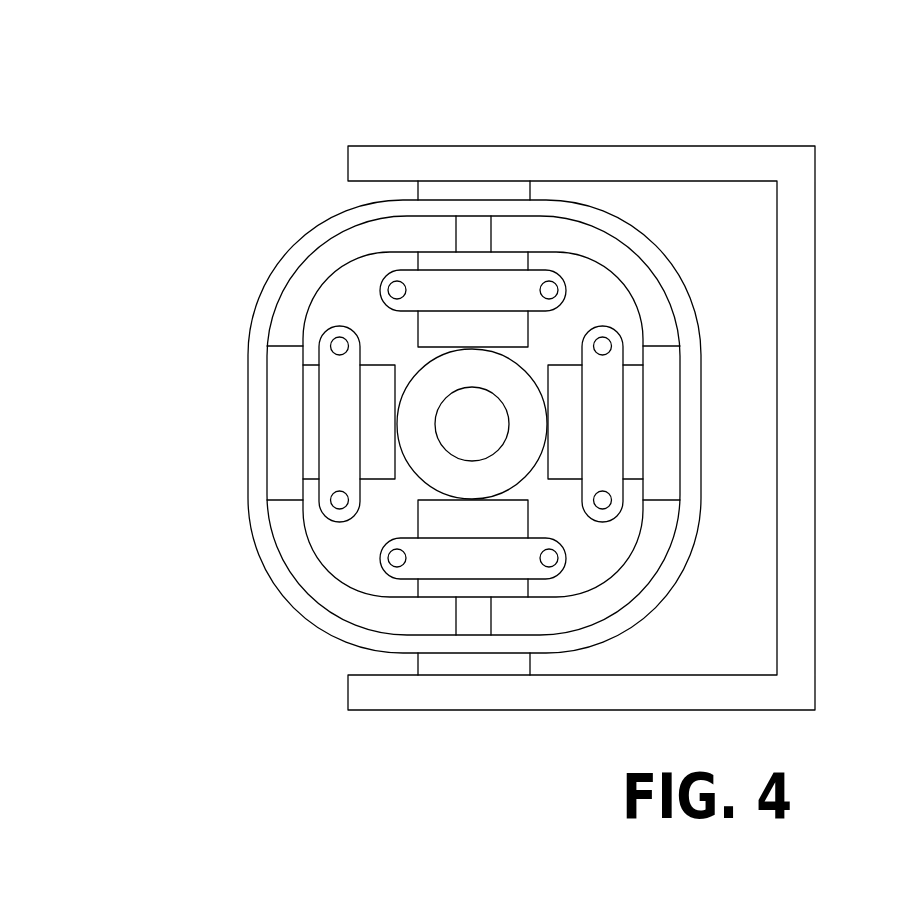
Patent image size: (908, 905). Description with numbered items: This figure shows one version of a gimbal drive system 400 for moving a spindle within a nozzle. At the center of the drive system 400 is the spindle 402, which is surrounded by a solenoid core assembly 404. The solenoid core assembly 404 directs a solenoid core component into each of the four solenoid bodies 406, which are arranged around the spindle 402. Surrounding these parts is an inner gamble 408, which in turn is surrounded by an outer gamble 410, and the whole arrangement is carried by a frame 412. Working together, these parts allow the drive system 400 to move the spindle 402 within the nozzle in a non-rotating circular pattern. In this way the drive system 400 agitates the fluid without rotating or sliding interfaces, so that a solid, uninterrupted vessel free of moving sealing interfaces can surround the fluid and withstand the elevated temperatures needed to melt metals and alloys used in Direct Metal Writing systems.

The drive system 400 is at (772, 90).
The spindle 402 is at (458, 432).
The solenoid core assembly 404 is at (432, 380).
The solenoid bodies 406 is at (445, 323).
The inner gamble 408 is at (323, 531).
The outer gamble 410 is at (250, 314).
The frame 412 is at (814, 408).